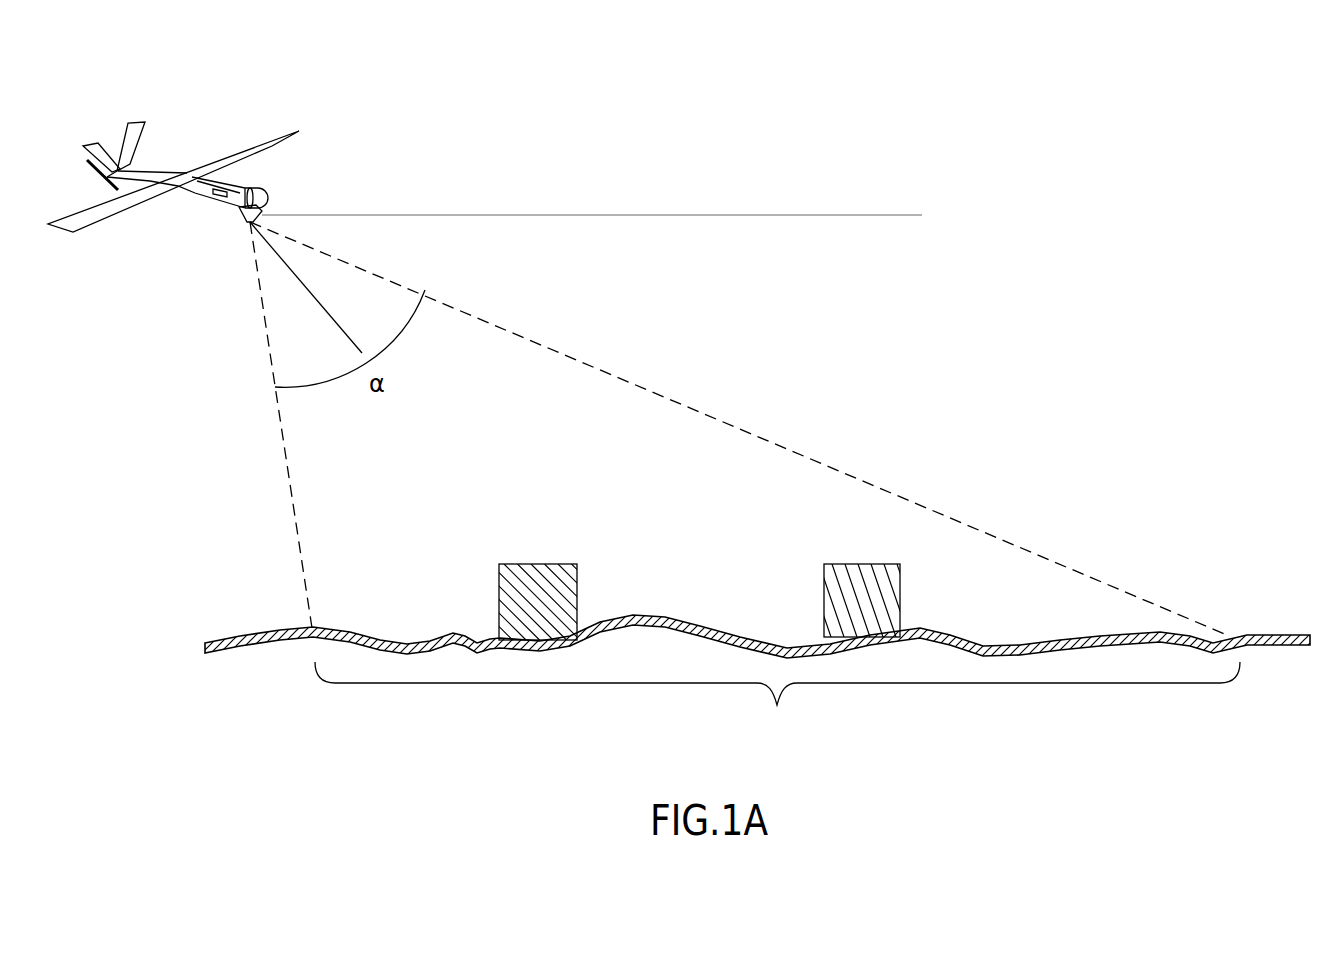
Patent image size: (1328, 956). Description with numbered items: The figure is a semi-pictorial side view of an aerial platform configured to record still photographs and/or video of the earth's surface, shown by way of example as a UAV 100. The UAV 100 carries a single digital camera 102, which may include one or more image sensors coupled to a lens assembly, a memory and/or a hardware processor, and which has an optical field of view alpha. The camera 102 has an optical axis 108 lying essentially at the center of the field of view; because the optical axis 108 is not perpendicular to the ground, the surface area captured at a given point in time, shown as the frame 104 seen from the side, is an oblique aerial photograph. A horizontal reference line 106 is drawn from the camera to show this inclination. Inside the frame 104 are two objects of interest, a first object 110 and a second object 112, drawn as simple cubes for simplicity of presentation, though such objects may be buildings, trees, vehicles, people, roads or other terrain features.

The UAV 100 is at (290, 117).
The camera 102 is at (240, 222).
The frame 104 is at (757, 675).
The horizontal reference line 106 is at (902, 203).
The optical axis 108 is at (323, 310).
The first object 110 is at (526, 547).
The second object 112 is at (848, 547).